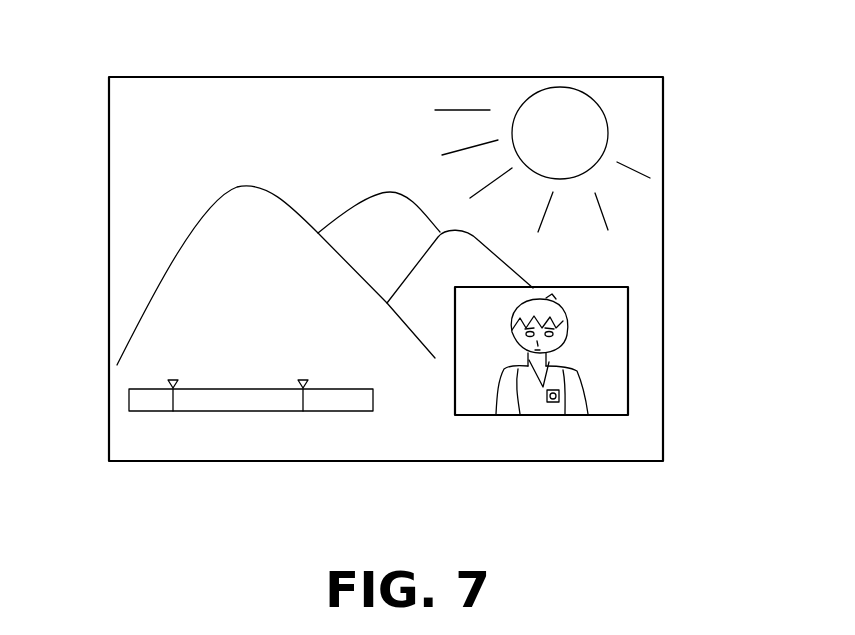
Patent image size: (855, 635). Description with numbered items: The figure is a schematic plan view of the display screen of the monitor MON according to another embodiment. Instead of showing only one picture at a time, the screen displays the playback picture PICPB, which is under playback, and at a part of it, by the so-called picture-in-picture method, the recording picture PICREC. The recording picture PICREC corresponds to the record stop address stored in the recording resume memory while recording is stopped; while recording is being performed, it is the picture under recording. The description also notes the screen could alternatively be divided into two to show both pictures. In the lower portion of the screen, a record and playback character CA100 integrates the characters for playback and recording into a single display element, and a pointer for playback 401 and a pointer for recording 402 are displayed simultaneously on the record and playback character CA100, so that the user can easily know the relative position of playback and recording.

The monitor MON is at (573, 62).
The playback picture PICPB is at (332, 91).
The recording picture PICREC is at (618, 320).
The record and playback character CA100 is at (208, 418).
The pointer for recording 402 is at (181, 384).
The pointer for playback 401 is at (311, 384).